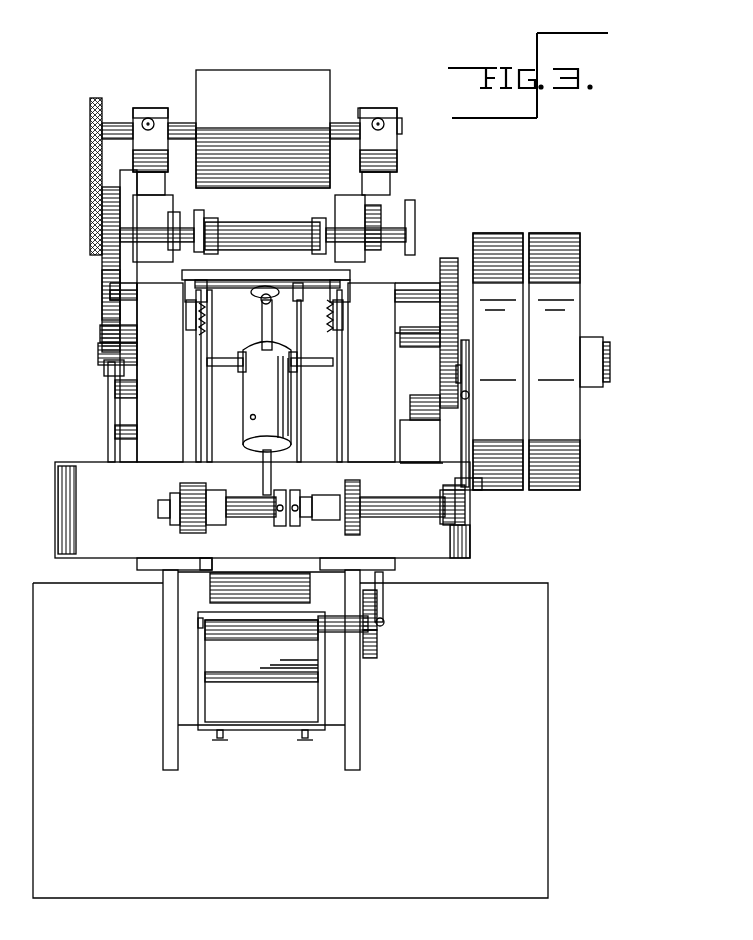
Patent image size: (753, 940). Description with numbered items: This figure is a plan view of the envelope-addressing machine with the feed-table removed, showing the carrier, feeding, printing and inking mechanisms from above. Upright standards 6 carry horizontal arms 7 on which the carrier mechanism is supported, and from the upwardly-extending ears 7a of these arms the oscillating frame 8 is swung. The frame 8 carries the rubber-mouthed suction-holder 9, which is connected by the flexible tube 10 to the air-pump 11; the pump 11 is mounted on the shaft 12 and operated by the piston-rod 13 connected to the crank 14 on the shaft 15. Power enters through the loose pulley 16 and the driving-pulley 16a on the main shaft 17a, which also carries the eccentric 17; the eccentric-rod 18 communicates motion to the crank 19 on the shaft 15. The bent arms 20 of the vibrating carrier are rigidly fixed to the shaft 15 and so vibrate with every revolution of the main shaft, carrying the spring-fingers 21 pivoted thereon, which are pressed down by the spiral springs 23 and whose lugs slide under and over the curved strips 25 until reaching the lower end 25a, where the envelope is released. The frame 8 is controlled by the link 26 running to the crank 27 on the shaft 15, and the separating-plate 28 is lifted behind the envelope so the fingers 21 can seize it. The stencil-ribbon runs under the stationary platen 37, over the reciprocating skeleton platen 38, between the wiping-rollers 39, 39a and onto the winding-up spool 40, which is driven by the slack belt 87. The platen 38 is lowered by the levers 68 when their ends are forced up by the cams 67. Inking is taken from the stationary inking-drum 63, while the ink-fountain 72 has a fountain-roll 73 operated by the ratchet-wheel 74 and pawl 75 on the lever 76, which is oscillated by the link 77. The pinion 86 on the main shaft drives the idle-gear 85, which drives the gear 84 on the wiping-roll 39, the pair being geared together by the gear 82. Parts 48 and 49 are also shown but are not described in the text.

The upright standard 6 is at (170, 540).
The horizontal arm 7 is at (182, 436).
The upwardly-extending ear 7a is at (275, 272).
The oscillating frame 8 is at (220, 304).
The suction-holder 9 is at (272, 304).
The flexible tube 10 is at (262, 330).
The air-pump 11 is at (250, 397).
The shaft 12 is at (236, 364).
The piston-rod 13 is at (262, 481).
The crank 14 is at (281, 527).
The shaft 15 is at (158, 513).
The loose pulley 16 is at (562, 233).
The driving-pulley 16a is at (498, 233).
The eccentric 17 is at (465, 340).
The main shaft 17a is at (104, 372).
The eccentric-rod 18 is at (462, 446).
The crank 19 is at (466, 508).
The arm 20 is at (202, 443).
The spring-finger 21 is at (196, 318).
The spiral spring 23 is at (266, 320).
The curved strip 25 is at (342, 328).
The lower end of strip 25a is at (214, 566).
The link 26 is at (300, 404).
The crank 27 is at (296, 527).
The separating-plate 28 is at (275, 308).
The stationary platen 37 is at (472, 551).
The reciprocating skeleton platen 38 is at (137, 566).
The wiping roller 39 is at (198, 216).
The wiping roller 39a is at (283, 222).
The winding-up spool 40 is at (263, 129).
The gear 48 is at (449, 258).
The pin 49 is at (450, 400).
The inking-drum 63 is at (210, 588).
The cam 67 is at (103, 332).
The lever 68 is at (108, 404).
The ink-fountain 72 is at (261, 676).
The fountain-roll 73 is at (198, 619).
The ratchet-wheel 74 is at (378, 650).
The pawl 75 is at (365, 634).
The lever 76 is at (385, 621).
The link 77 is at (384, 598).
The gear 82 is at (385, 212).
The gear 84 is at (102, 258).
The idle-gear 85 is at (104, 290).
The pinion 86 is at (100, 352).
The belt 87 is at (92, 183).